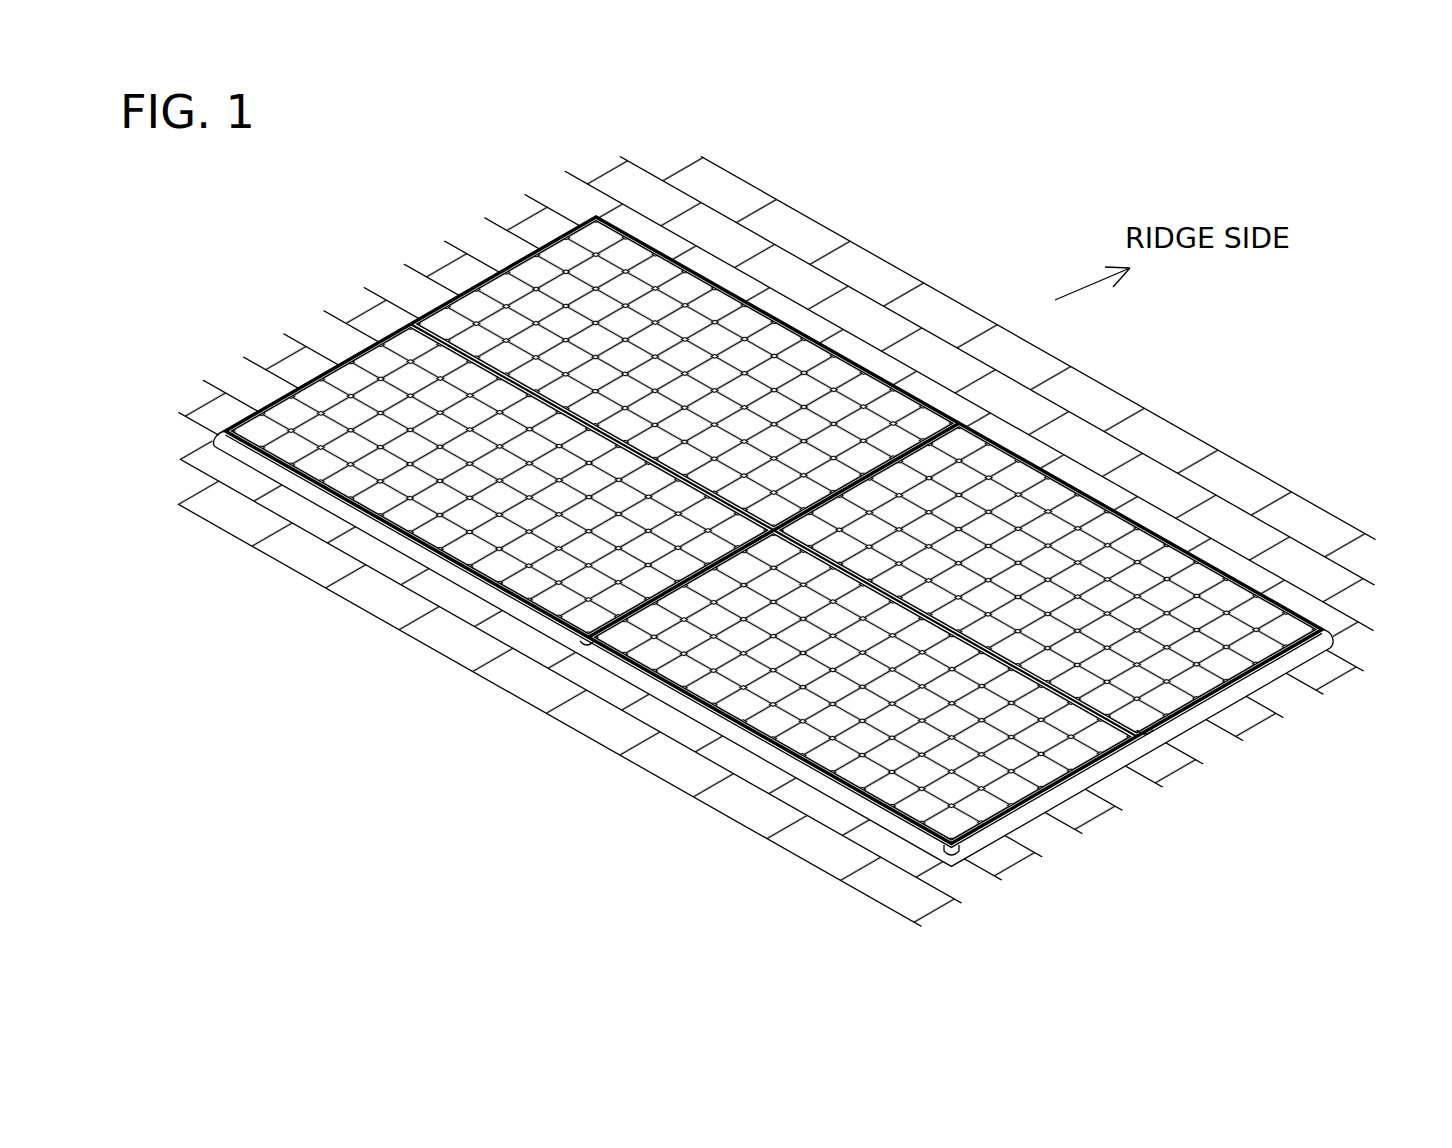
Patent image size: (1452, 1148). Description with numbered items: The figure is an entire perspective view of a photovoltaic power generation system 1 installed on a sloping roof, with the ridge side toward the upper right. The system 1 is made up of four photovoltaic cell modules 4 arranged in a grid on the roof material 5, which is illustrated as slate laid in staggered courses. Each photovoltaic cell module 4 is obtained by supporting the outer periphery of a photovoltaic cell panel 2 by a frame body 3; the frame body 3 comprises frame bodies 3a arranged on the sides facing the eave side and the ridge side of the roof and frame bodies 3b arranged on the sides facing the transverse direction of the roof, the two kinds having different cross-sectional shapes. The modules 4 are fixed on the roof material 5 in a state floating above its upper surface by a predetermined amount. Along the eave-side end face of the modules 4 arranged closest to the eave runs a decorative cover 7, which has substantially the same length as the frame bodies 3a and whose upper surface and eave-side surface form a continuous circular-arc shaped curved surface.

The photovoltaic power generation system 1 is at (772, 528).
The photovoltaic cell panel 2 is at (480, 300).
The frame body 3 is at (767, 526).
The frame body 3a is at (668, 248).
The frame body 3b is at (548, 258).
The photovoltaic cell module 4 is at (503, 252).
The roof material 5 is at (800, 270).
The decorative cover 7 is at (704, 734).